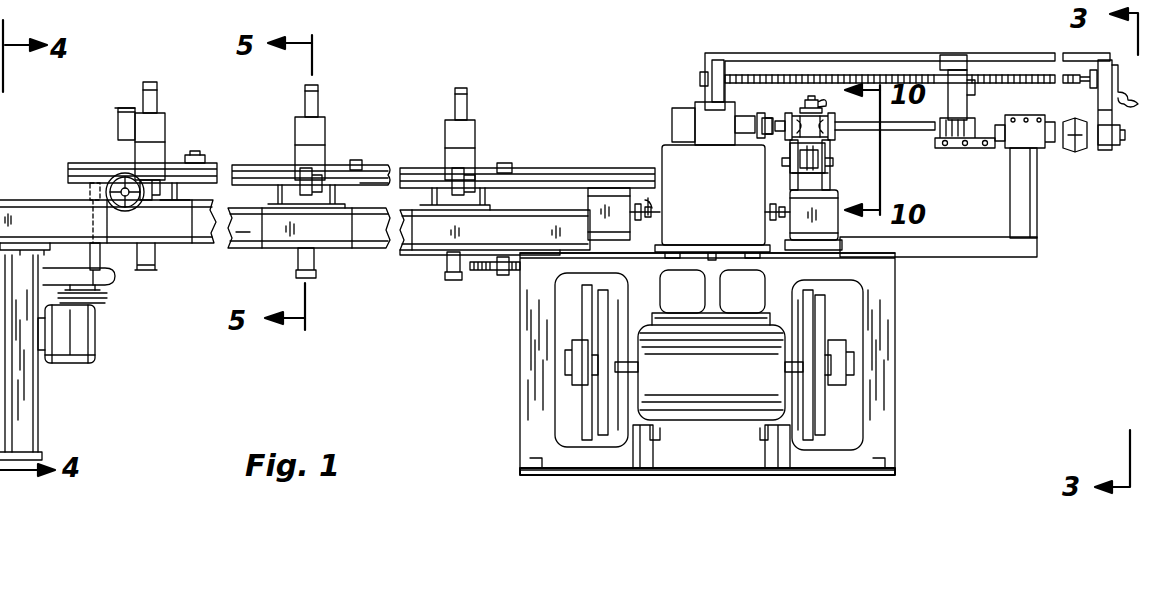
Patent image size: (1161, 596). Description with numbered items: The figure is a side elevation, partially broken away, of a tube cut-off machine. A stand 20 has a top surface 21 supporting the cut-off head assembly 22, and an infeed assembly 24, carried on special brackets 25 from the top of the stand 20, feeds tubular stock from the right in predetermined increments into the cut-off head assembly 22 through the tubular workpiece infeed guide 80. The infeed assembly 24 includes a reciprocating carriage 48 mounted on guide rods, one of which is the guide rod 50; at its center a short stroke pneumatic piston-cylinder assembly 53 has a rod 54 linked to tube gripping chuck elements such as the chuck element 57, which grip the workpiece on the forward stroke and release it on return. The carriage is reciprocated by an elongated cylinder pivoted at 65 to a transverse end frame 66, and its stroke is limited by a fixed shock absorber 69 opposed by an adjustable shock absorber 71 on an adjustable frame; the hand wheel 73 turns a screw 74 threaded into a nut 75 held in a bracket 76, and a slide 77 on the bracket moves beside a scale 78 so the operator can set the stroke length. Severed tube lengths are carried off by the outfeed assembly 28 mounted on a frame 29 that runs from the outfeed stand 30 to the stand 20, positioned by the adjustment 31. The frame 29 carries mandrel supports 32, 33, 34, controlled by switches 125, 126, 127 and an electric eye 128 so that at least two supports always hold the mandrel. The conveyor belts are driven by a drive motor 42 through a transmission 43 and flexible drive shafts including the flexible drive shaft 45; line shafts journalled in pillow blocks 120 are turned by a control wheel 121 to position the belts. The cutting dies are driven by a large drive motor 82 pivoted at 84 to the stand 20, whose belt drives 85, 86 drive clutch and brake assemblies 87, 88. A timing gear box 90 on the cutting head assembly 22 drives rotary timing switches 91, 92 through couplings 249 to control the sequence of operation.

The stand 20 is at (912, 326).
The top surface 21 is at (810, 258).
The cut-off head assembly 22 is at (662, 124).
The infeed assembly 24 is at (1047, 210).
The brackets 25 is at (985, 257).
The outfeed assembly 28 is at (342, 112).
The frame 29 is at (247, 233).
The outfeed stand 30 is at (30, 410).
The adjustment 31 is at (496, 276).
The mandrel support 32 is at (166, 120).
The mandrel support 33 is at (295, 128).
The mandrel support 34 is at (476, 135).
The drive motor 42 is at (95, 338).
The transmission 43 is at (118, 282).
The flexible drive shaft 45 is at (92, 222).
The reciprocating carriage 48 is at (846, 148).
The guide rod 50 is at (901, 132).
The short stroke pneumatic piston-cylinder assembly 53 is at (803, 95).
The rod 54 is at (790, 152).
The tube gripping chuck element 57 is at (820, 180).
The pivot 65 is at (1083, 150).
The transverse end frame 66 is at (1098, 150).
The shock absorber 69 is at (786, 122).
The adjustable shock absorber 71 is at (945, 143).
The hand wheel 73 is at (1122, 70).
The screw 74 is at (1022, 75).
The nut 75 is at (972, 92).
The bracket 76 is at (953, 98).
The slide 77 is at (975, 40).
The scale 78 is at (878, 38).
The tubular workpiece infeed guide 80 is at (778, 195).
The drive motor 82 is at (723, 422).
The pivot 84 is at (665, 435).
The belt drive 85 is at (606, 312).
The belt drive 86 is at (816, 310).
The clutch and brake assembly 87 is at (606, 395).
The clutch and brake assembly 88 is at (820, 400).
The timing gear box 90 is at (667, 160).
The rotary timing switch 91 is at (592, 196).
The rotary timing switch 92 is at (828, 223).
The pillow block 120 is at (378, 183).
The control wheel 121 is at (132, 208).
The switch 125 is at (198, 155).
The switch 126 is at (358, 160).
The switch 127 is at (507, 163).
The electric eye 128 is at (118, 124).
The coupling 249 is at (650, 204).